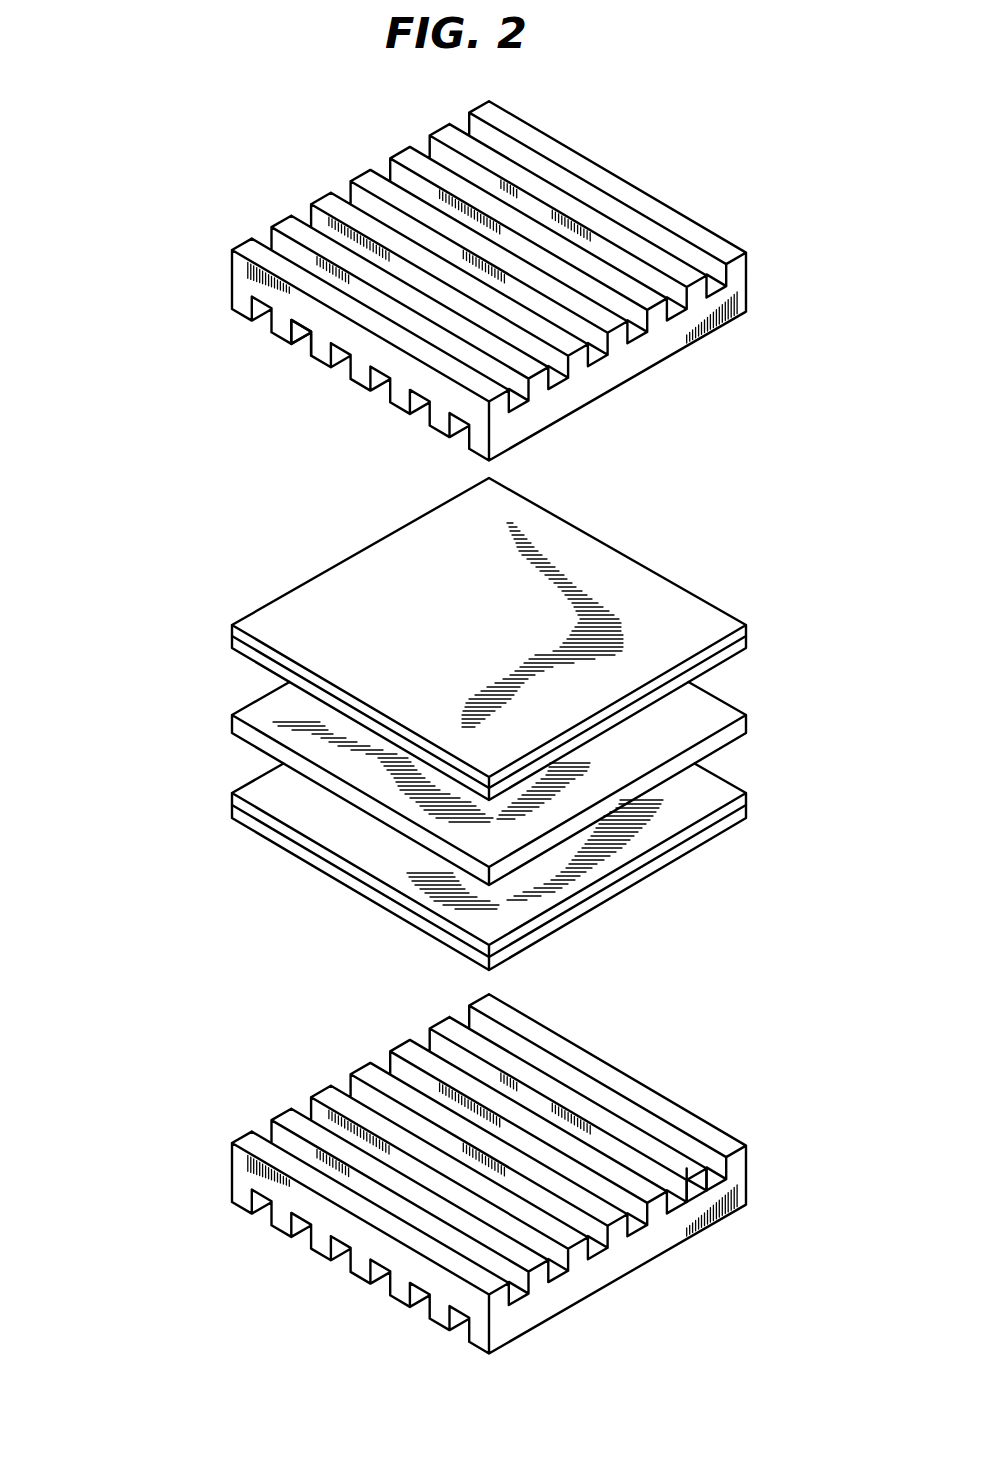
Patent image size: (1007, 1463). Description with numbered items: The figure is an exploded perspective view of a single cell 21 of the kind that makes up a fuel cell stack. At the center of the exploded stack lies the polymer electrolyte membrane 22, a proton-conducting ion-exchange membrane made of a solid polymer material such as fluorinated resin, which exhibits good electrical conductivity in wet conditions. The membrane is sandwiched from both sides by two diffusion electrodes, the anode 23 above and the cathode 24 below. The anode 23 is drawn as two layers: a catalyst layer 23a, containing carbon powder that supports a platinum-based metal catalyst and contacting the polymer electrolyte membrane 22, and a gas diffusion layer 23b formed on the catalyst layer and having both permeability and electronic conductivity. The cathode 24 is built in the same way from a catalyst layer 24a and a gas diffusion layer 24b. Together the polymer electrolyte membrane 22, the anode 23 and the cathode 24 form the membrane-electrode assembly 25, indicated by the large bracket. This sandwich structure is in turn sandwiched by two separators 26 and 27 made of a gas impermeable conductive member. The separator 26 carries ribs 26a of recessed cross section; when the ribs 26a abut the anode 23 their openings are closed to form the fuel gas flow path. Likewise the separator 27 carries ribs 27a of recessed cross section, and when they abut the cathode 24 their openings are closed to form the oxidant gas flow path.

The cell 21 is at (79, 196).
The polymer electrolyte membrane 22 is at (232, 727).
The anode 23 is at (421, 639).
The catalyst layer 23a is at (232, 646).
The gas diffusion layer 23b is at (232, 636).
The cathode 24 is at (421, 867).
The catalyst layer 24a is at (232, 804).
The gas diffusion layer 24b is at (232, 814).
The membrane-electrode assembly 25 is at (95, 618).
The separator 26 is at (232, 282).
The ribs 26a is at (302, 345).
The separator 27 is at (748, 1188).
The ribs 27a is at (695, 1183).